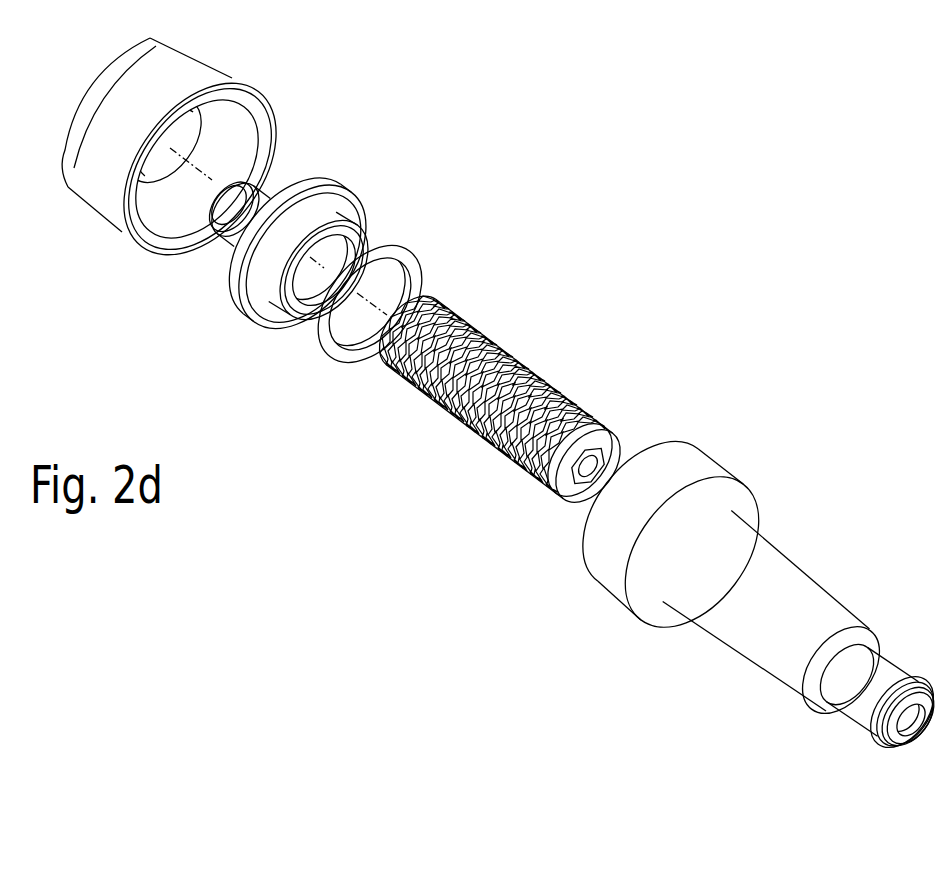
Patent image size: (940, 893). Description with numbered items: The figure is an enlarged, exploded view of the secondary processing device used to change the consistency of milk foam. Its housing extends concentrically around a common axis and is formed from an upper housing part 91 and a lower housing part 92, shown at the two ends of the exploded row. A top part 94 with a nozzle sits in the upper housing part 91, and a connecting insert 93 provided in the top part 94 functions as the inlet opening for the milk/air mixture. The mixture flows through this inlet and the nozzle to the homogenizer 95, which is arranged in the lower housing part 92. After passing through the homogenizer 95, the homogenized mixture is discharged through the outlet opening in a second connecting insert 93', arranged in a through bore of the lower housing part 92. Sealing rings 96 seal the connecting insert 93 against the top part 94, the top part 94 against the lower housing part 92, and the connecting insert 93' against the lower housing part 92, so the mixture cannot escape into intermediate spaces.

The upper housing part 91 is at (240, 66).
The lower housing part 92 is at (752, 476).
The connecting insert 93 is at (192, 248).
The connecting insert 93' is at (875, 725).
The top part 94 is at (352, 178).
The homogenizer 95 is at (581, 406).
The sealing rings 96 is at (410, 242).